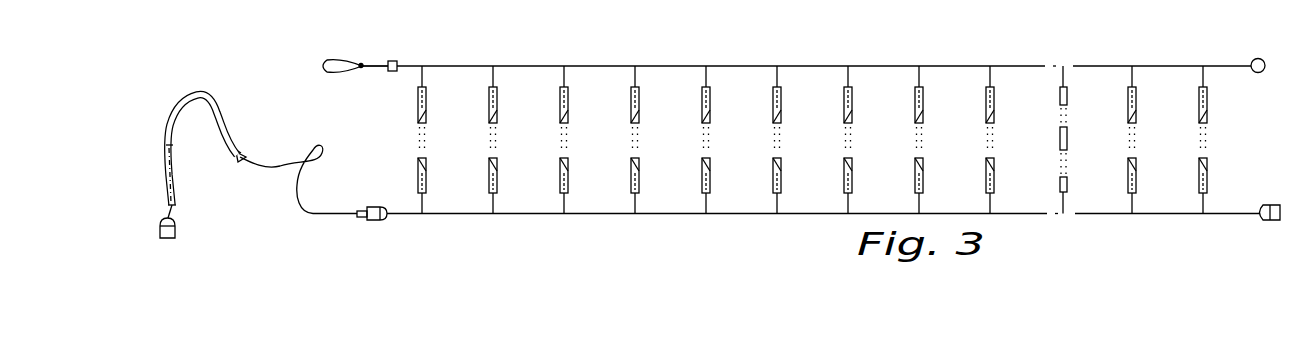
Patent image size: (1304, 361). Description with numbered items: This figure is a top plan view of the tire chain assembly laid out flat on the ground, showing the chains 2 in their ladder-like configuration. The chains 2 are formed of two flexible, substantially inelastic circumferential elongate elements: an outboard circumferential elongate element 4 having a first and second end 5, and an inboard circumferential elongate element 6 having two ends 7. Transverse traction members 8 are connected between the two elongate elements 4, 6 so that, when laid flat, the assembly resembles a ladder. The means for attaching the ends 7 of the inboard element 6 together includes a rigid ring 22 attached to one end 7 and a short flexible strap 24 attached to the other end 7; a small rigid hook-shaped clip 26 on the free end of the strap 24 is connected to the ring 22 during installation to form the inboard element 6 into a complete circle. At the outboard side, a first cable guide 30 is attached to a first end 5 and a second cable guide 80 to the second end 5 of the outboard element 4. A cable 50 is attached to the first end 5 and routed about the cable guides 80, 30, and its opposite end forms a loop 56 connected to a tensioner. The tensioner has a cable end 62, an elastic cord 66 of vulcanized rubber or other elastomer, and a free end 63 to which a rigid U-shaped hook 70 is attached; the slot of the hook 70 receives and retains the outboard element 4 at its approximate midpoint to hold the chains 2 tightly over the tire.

The chains 2 is at (737, 230).
The outboard circumferential elongate element 4 is at (620, 214).
The ends of outboard circumferential element 5 is at (1262, 219).
The inboard circumferential elongate element 6 is at (595, 64).
The ends of inboard circumferential element 7 is at (397, 62).
The transverse traction members 8 is at (777, 93).
The rigid ring 22 is at (1258, 73).
The short flexible strap 24 is at (378, 62).
The rigid clip 26 is at (333, 61).
The first cable guide 30 is at (370, 221).
The cable 50 is at (343, 212).
The loop 56 is at (240, 155).
The cable end 62 is at (238, 158).
The free end 63 is at (175, 213).
The elastic cord 66 is at (217, 98).
The rigid hook 70 is at (175, 236).
The second cable guide 80 is at (1263, 206).